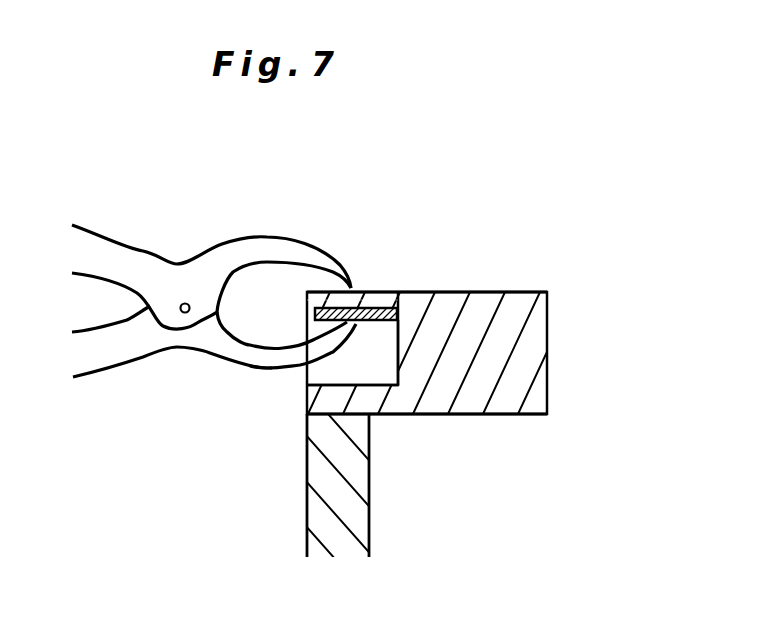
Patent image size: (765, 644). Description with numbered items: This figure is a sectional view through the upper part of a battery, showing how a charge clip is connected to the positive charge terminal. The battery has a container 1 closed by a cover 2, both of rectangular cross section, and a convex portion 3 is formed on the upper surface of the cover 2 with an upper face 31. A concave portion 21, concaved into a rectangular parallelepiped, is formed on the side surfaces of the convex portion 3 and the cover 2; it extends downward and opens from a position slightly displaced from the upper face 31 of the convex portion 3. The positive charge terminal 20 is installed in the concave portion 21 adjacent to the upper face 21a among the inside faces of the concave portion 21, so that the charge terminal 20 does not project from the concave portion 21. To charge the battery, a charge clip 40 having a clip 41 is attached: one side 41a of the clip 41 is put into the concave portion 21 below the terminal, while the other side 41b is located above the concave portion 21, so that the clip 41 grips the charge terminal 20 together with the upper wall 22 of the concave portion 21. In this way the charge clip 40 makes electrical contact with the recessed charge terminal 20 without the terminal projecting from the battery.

The container 1 is at (323, 520).
The cover 2 is at (478, 398).
The convex portion 3 is at (499, 305).
The charge terminal 20 is at (367, 325).
The concave portion 21 is at (331, 369).
The upper face 21a is at (383, 320).
The upper wall 22 is at (355, 312).
The upper face 31 is at (421, 291).
The charge clip 40 is at (192, 259).
The clip 41 is at (257, 231).
The one side of clip 41a is at (283, 360).
The other side of clip 41b is at (302, 258).